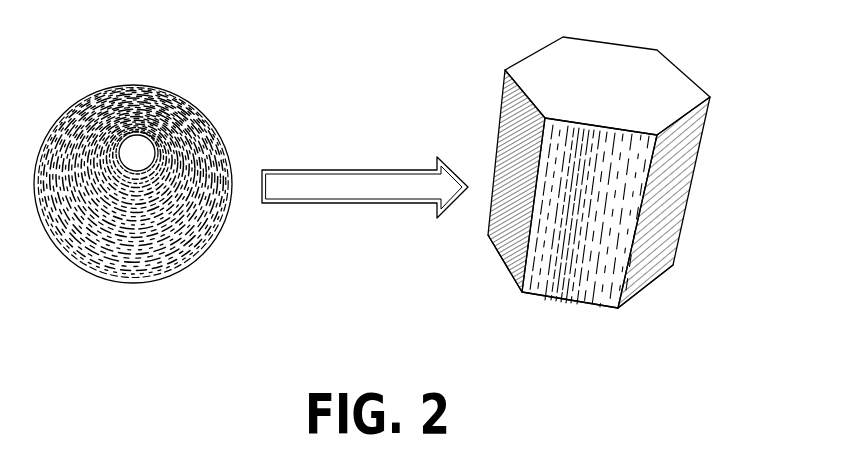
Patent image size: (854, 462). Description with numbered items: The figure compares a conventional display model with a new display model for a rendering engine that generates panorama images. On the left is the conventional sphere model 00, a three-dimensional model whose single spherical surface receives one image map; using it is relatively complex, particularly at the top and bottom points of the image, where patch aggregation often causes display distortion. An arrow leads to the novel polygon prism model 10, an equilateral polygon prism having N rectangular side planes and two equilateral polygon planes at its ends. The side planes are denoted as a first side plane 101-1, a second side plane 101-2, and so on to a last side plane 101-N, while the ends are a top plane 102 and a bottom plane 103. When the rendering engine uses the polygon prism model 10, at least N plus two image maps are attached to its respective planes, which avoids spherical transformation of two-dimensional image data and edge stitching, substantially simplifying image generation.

The sphere model 00 is at (78, 279).
The polygon prism model 10 is at (602, 191).
The last side plane 101-N is at (510, 157).
The first side plane 101-1 is at (608, 253).
The second side plane 101-2 is at (667, 172).
The top plane 102 is at (610, 58).
The bottom plane 103 is at (583, 303).